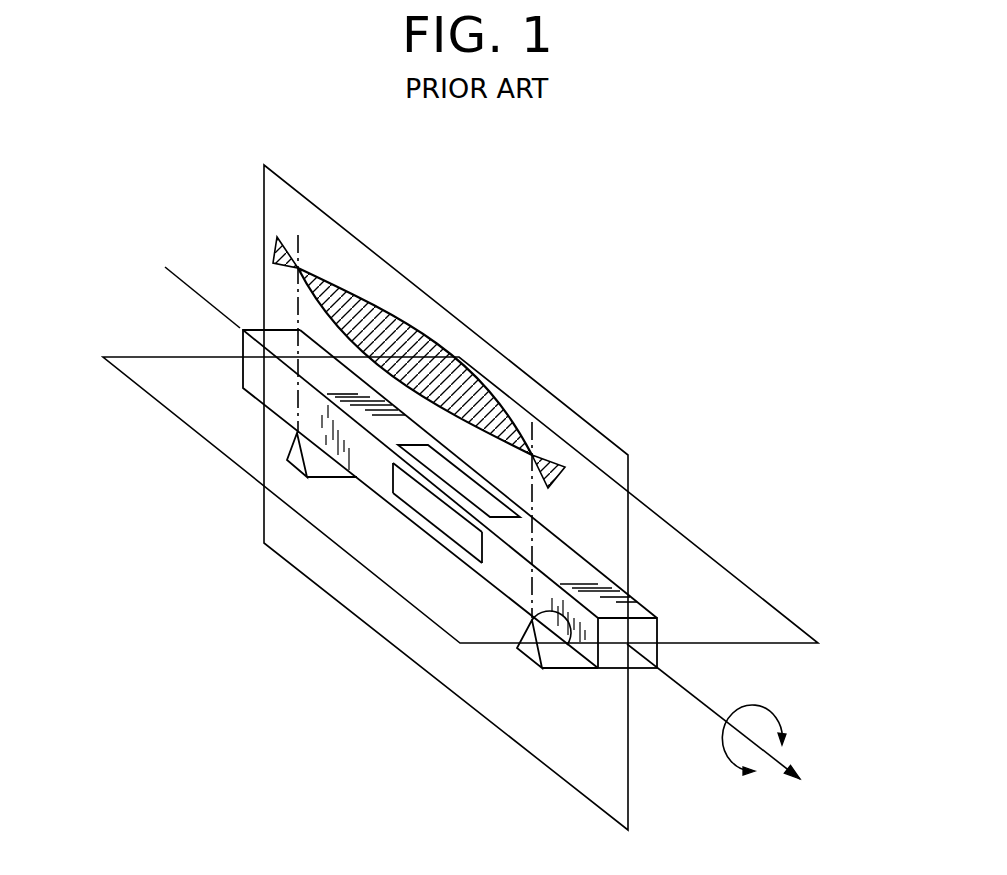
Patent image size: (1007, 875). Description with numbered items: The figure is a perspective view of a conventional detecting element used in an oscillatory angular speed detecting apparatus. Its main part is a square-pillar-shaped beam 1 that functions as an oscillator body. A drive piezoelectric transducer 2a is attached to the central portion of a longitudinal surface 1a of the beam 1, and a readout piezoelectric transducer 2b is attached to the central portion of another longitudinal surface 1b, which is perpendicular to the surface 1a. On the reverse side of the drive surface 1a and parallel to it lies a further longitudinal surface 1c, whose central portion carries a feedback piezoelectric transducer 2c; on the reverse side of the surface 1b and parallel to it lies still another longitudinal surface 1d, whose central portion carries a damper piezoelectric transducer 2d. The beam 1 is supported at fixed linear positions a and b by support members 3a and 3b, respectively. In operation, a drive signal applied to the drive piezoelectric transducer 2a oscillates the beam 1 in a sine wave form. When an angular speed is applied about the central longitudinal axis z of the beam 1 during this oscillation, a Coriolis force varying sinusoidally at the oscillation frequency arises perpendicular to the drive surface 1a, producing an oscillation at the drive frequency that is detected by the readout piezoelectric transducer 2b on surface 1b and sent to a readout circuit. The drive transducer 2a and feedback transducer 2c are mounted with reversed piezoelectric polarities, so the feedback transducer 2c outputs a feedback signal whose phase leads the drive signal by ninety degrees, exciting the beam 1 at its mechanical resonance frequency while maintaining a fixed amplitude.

The beam 1 is at (512, 582).
The longitudinal surface 1a is at (578, 572).
The longitudinal surface 1b is at (370, 478).
The longitudinal surface 1c is at (482, 570).
The longitudinal surface 1d is at (608, 585).
The drive piezoelectric transducer 2a is at (487, 494).
The readout piezoelectric transducer 2b is at (427, 512).
The feedback piezoelectric transducer 2c is at (443, 553).
The damper piezoelectric transducer 2d is at (540, 518).
The support member 3a is at (289, 462).
The support member 3b is at (525, 655).
The fixed linear position a is at (297, 433).
The fixed linear position b is at (567, 645).
The central longitudinal axis z is at (697, 700).